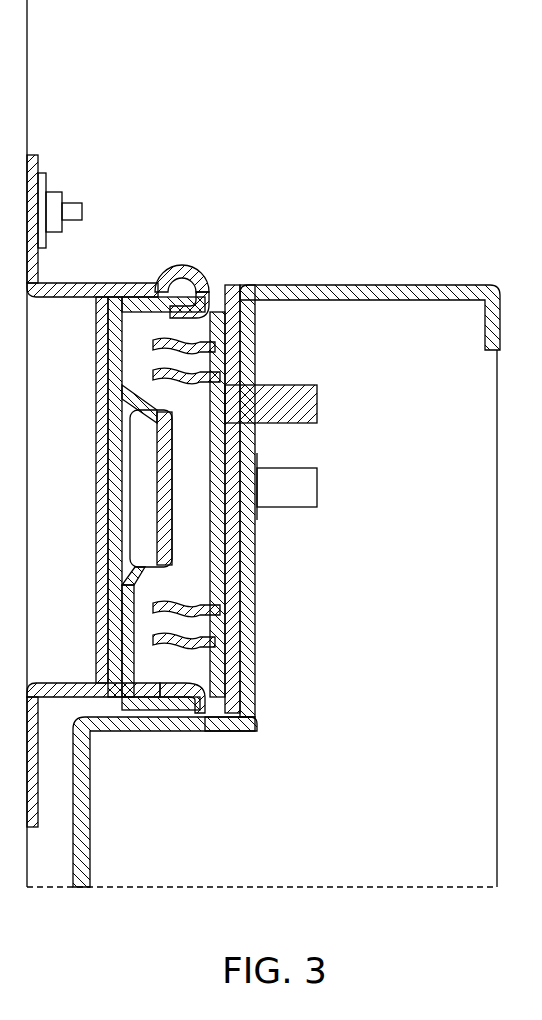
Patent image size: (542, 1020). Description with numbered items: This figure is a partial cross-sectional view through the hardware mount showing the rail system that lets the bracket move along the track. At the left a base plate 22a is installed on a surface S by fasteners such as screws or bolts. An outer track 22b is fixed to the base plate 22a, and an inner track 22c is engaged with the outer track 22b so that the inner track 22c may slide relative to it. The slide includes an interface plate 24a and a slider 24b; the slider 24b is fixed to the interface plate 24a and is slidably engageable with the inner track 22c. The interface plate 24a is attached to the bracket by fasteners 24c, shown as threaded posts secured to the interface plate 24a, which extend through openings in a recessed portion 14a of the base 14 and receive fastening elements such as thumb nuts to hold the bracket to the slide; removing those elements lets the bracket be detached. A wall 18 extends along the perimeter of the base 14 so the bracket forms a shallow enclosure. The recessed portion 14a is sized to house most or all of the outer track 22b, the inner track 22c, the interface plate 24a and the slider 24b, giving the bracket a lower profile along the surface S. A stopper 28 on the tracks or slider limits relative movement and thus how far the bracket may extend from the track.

The surface S is at (29, 92).
The base 14 is at (80, 828).
The recessed portion 14a is at (203, 742).
The wall 18 is at (385, 285).
The base plate 22a is at (84, 283).
The outer track 22b is at (140, 283).
The inner track 22c is at (198, 302).
The interface plate 24a is at (237, 322).
The slider 24b is at (222, 562).
The fasteners 24c is at (310, 395).
The stopper 28 is at (195, 533).